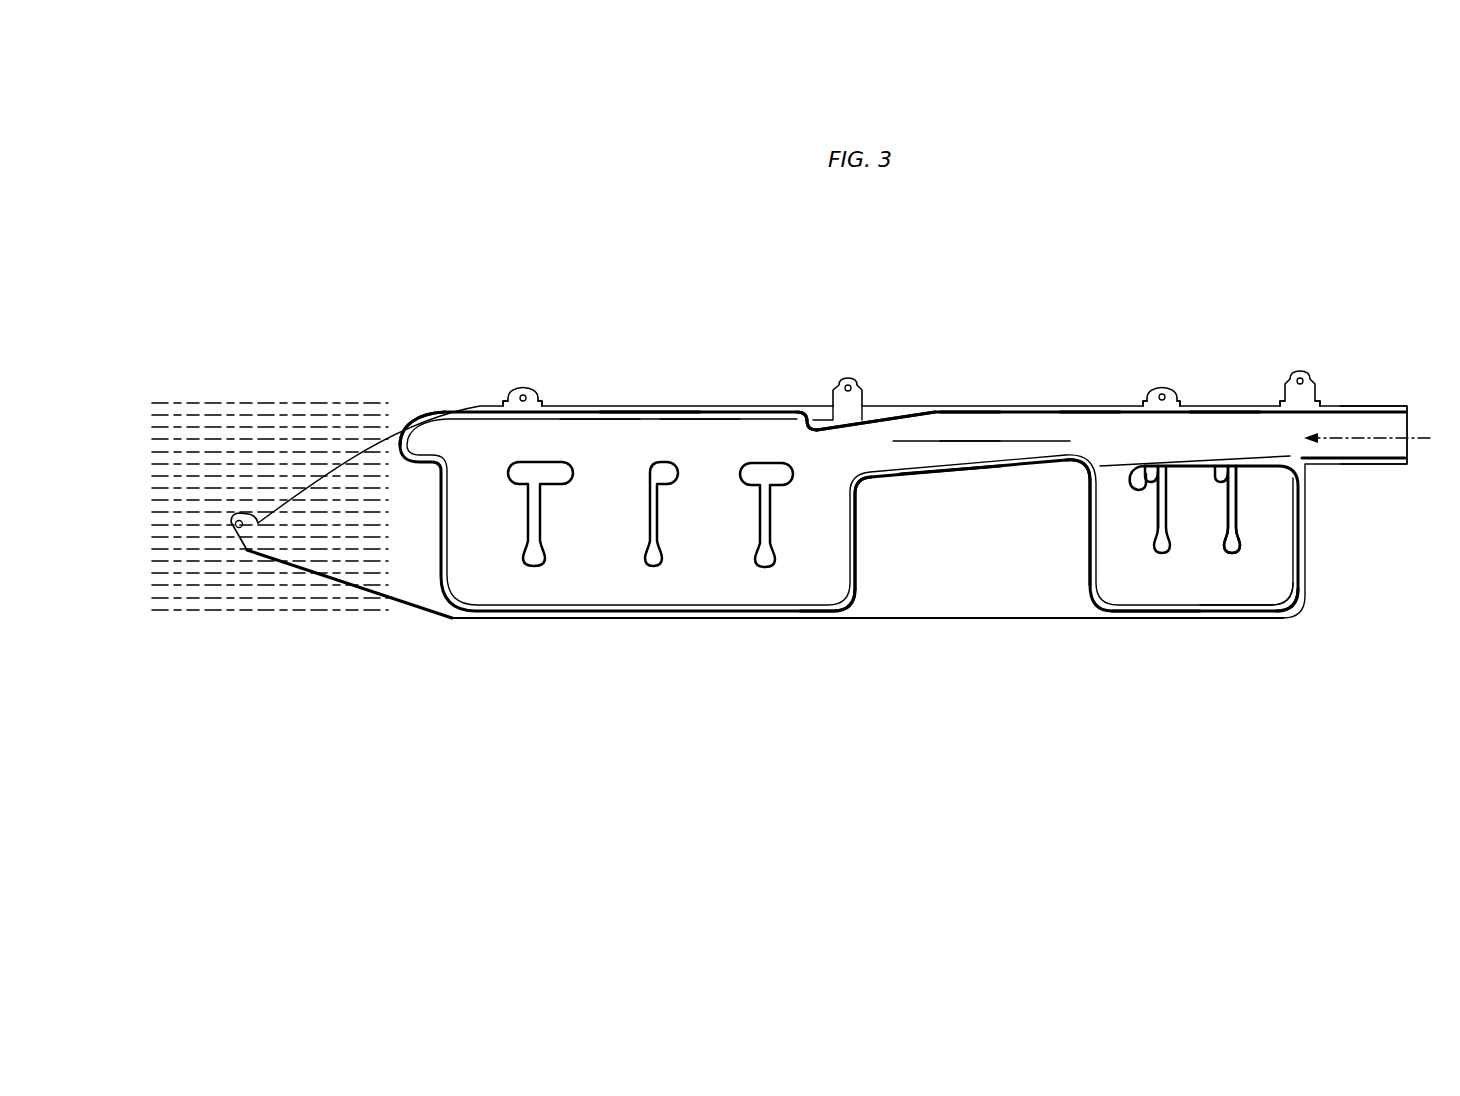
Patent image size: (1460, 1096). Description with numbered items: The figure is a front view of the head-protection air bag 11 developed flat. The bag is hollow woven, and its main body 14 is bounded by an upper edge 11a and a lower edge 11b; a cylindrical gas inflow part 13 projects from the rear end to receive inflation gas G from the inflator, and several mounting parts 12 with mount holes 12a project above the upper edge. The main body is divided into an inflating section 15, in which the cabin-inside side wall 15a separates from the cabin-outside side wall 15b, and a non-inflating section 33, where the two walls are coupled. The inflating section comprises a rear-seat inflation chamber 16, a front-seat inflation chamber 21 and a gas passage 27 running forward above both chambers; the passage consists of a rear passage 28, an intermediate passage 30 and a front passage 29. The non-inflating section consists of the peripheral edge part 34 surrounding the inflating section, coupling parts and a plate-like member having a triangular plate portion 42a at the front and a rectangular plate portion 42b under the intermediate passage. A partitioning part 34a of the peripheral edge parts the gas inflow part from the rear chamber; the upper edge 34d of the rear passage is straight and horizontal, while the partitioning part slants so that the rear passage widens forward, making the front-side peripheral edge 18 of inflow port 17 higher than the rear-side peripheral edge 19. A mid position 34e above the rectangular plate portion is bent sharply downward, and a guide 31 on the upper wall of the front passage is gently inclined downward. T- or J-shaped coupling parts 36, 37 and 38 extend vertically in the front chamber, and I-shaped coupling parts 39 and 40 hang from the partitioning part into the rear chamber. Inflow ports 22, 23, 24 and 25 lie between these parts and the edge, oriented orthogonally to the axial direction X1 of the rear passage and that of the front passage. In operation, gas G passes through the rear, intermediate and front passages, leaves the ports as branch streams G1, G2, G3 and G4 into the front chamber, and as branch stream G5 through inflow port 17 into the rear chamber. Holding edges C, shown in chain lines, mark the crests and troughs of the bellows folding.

The air bag 11 is at (483, 306).
The upper edge 11a is at (940, 400).
The lower edge 11b is at (790, 612).
The mounting part 12 is at (525, 385).
The mount hole 12a is at (512, 400).
The gas inflow part 13 is at (1370, 420).
The main body 14 is at (1292, 806).
The inflating section 15 is at (1240, 760).
The cabin-inside side wall 15a is at (562, 593).
The cabin-outside side wall 15b is at (603, 587).
The rear-seat inflation chamber 16 is at (1228, 587).
The inflow port 17 is at (1090, 473).
The front-side peripheral edge 18 is at (1090, 440).
The rear-side peripheral edge 19 is at (1140, 465).
The front-seat inflation chamber 21 is at (848, 603).
The inflow port 22 is at (458, 443).
The inflow port 23 is at (597, 452).
The inflow port 24 is at (697, 465).
The inflow port 25 is at (840, 500).
The gas passage 27 is at (960, 445).
The rear passage 28 is at (1218, 440).
The front passage 29 is at (640, 430).
The intermediate passage 30 is at (970, 430).
The guide 31 is at (800, 395).
The non-inflating section 33 is at (1277, 620).
The peripheral edge part 34 is at (833, 587).
The partitioning part 34a is at (1262, 468).
The upper edge 34d is at (1148, 618).
The mid position 34e is at (1000, 467).
The coupling part 36 is at (533, 565).
The coupling part 37 is at (657, 567).
The coupling part 38 is at (762, 567).
The coupling part 39 is at (1153, 510).
The coupling part 40 is at (1235, 538).
The triangular plate portion 42a is at (418, 595).
The rectangular plate portion 42b is at (900, 598).
The holding edge C is at (273, 427).
The inflation gas G is at (1380, 438).
The branch stream G1 is at (490, 452).
The branch stream G2 is at (616, 452).
The branch stream G3 is at (719, 452).
The branch stream G4 is at (822, 452).
The branch stream G5 is at (1124, 452).
The axial direction X1 is at (1012, 438).